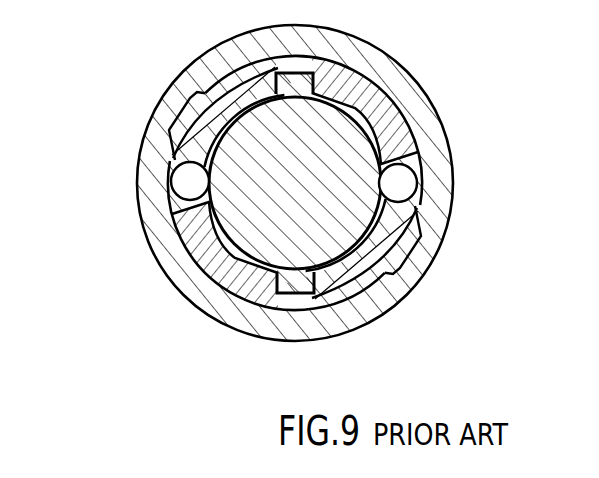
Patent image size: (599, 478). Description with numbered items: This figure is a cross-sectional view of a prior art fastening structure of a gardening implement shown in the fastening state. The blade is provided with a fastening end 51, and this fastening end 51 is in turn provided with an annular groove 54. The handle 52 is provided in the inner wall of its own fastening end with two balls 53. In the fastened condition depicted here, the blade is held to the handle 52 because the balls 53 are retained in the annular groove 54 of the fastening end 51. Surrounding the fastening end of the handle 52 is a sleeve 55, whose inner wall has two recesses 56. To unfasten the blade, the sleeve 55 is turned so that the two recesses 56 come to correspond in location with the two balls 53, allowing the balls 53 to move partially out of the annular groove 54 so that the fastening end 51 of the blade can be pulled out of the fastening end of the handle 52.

The fastening end 51 is at (240, 282).
The handle 52 is at (390, 125).
The balls 53 is at (183, 180).
The annular groove 54 is at (345, 82).
The sleeve 55 is at (163, 230).
The recesses 56 is at (413, 247).